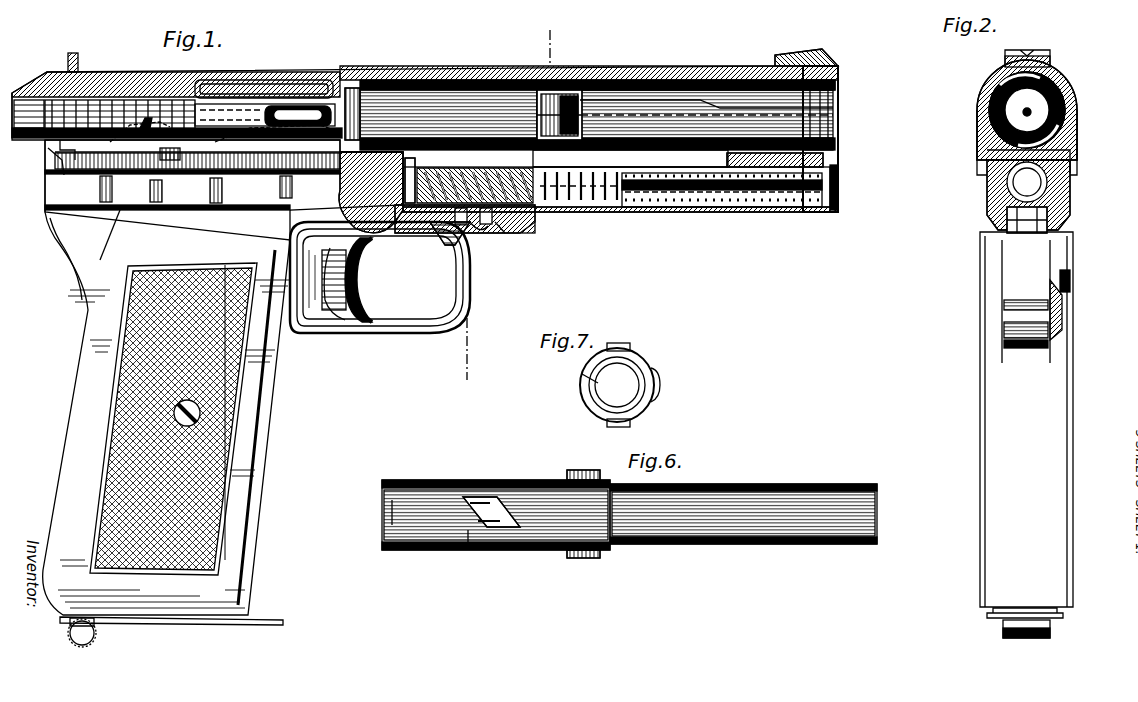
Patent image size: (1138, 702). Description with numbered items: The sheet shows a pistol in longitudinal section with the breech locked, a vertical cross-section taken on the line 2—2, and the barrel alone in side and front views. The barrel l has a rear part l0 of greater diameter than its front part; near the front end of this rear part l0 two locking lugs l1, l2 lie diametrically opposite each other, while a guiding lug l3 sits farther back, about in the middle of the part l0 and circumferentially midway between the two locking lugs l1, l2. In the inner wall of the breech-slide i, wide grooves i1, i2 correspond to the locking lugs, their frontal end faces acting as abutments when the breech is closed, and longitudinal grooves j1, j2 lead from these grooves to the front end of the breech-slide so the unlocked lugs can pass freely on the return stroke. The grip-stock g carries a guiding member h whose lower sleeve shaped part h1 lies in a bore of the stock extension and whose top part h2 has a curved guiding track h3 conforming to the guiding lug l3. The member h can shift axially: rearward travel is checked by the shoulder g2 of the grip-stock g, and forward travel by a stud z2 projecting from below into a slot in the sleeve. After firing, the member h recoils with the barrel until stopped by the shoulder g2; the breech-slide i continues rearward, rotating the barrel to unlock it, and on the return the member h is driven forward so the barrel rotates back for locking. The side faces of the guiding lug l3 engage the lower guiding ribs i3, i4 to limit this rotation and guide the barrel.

In FIG. 1, the curved guiding track h3 is at (470, 88).
In FIG. 1, the rear part of the barrel l0 is at (484, 70).
In FIG. 7, the rear part of the barrel l0 is at (594, 410).
In FIG. 6, the rear part of the barrel l0 is at (533, 482).
In FIG. 1, the locking lug l1 is at (568, 104).
In FIG. 7, the locking lug l1 is at (622, 428).
In FIG. 6, the locking lug l1 is at (583, 558).
In FIG. 1, the locking lug l2 is at (553, 120).
In FIG. 7, the locking lug l2 is at (625, 348).
In FIG. 6, the locking lug l2 is at (583, 478).
In FIG. 1, the guiding lug l3 is at (428, 226).
In FIG. 7, the guiding lug l3 is at (660, 385).
In FIG. 6, the guiding lug l3 is at (487, 548).
In FIG. 2, the guiding lug l3 is at (1062, 182).
In FIG. 1, the barrel l is at (836, 104).
In FIG. 6, the barrel l is at (722, 496).
In FIG. 1, the breech-slide i is at (640, 70).
In FIG. 2, the breech-slide i is at (1053, 110).
In FIG. 2, the wide groove i1 is at (990, 92).
In FIG. 2, the wide groove i2 is at (1029, 106).
In FIG. 2, the lower guiding rib i3 is at (1006, 154).
In FIG. 2, the lower guiding rib i4 is at (1091, 161).
In FIG. 1, the longitudinal groove j1 is at (730, 195).
In FIG. 2, the longitudinal groove j1 is at (962, 123).
In FIG. 1, the longitudinal groove j2 is at (660, 112).
In FIG. 2, the longitudinal groove j2 is at (1089, 135).
In FIG. 1, the grip-stock g is at (224, 189).
In FIG. 2, the grip-stock g is at (1014, 416).
In FIG. 1, the shoulder g2 is at (400, 232).
In FIG. 2, the guiding member h is at (1033, 195).
In FIG. 1, the sleeve shaped part h1 is at (515, 220).
In FIG. 1, the top part h2 is at (498, 225).
In FIG. 1, the stud z2 is at (470, 230).
In FIG. 2, the stud z2 is at (1000, 223).
In FIG. 1, the section line 2 is at (507, 203).